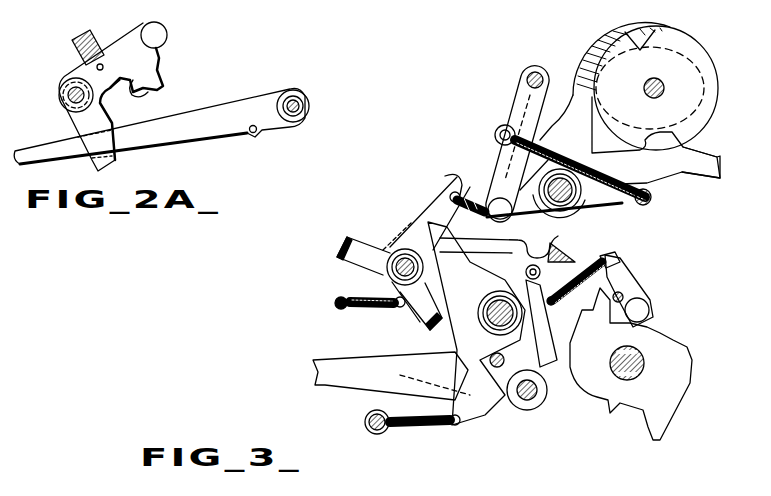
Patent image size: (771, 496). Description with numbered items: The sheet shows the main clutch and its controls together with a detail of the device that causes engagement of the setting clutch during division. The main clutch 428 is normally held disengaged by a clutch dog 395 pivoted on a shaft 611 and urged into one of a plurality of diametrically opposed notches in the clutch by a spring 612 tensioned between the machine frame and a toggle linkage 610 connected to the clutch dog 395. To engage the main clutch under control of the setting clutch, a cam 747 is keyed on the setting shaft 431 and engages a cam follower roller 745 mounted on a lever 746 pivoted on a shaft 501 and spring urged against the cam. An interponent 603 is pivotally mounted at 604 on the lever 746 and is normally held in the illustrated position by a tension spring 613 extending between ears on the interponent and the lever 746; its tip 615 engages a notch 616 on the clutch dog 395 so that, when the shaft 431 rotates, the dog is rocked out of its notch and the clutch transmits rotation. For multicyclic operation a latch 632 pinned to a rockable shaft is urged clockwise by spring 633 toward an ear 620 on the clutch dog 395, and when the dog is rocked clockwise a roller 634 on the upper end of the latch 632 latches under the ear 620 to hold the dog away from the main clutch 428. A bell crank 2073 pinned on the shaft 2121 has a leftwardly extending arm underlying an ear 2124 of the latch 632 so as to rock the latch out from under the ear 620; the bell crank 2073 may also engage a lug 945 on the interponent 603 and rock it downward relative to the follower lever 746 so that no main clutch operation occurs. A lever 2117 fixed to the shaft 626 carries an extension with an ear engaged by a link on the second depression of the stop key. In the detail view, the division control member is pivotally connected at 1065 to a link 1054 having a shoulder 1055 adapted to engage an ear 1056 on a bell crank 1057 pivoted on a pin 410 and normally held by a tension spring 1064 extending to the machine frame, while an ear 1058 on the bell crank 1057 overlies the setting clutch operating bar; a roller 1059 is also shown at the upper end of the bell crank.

In FIG. 2A, the pin 410 is at (58, 95).
In FIG. 2A, the link 1054 is at (205, 140).
In FIG. 2A, the shoulder 1055 is at (85, 158).
In FIG. 2A, the ear 1056 is at (118, 162).
In FIG. 2A, the bell crank 1057 is at (132, 100).
In FIG. 2A, the ear 1058 is at (166, 80).
In FIG. 2A, the roller 1059 is at (167, 35).
In FIG. 2A, the tension spring 1064 is at (70, 50).
In FIG. 2A, the pivotal connection 1065 is at (309, 106).
In FIG. 3, the main clutch 428 is at (642, 111).
In FIG. 3, the clutch dog 395 is at (675, 175).
In FIG. 3, the toggle linkage 610 is at (500, 158).
In FIG. 3, the spring 612 is at (500, 150).
In FIG. 3, the shaft 611 is at (565, 195).
In FIG. 3, the ear 620 is at (480, 222).
In FIG. 3, the latch 632 is at (450, 192).
In FIG. 3, the roller 634 is at (437, 181).
In FIG. 3, the lever 2117 is at (410, 238).
In FIG. 3, the shaft 626 is at (388, 278).
In FIG. 3, the spring 633 is at (359, 312).
In FIG. 3, the ear 2124 is at (420, 328).
In FIG. 3, the shaft 501 is at (492, 326).
In FIG. 3, the bell crank 2073 is at (492, 405).
In FIG. 3, the shaft 2121 is at (540, 405).
In FIG. 3, the notch 616 is at (530, 250).
In FIG. 3, the tip 615 is at (555, 232).
In FIG. 3, the interponent 603 is at (600, 256).
In FIG. 3, the tension spring 613 is at (622, 258).
In FIG. 3, the lever 746 is at (630, 272).
In FIG. 3, the pivot 604 is at (624, 297).
In FIG. 3, the cam follower roller 745 is at (649, 310).
In FIG. 3, the lug 945 is at (596, 300).
In FIG. 3, the cam 747 is at (665, 420).
In FIG. 3, the setting shaft 431 is at (613, 393).